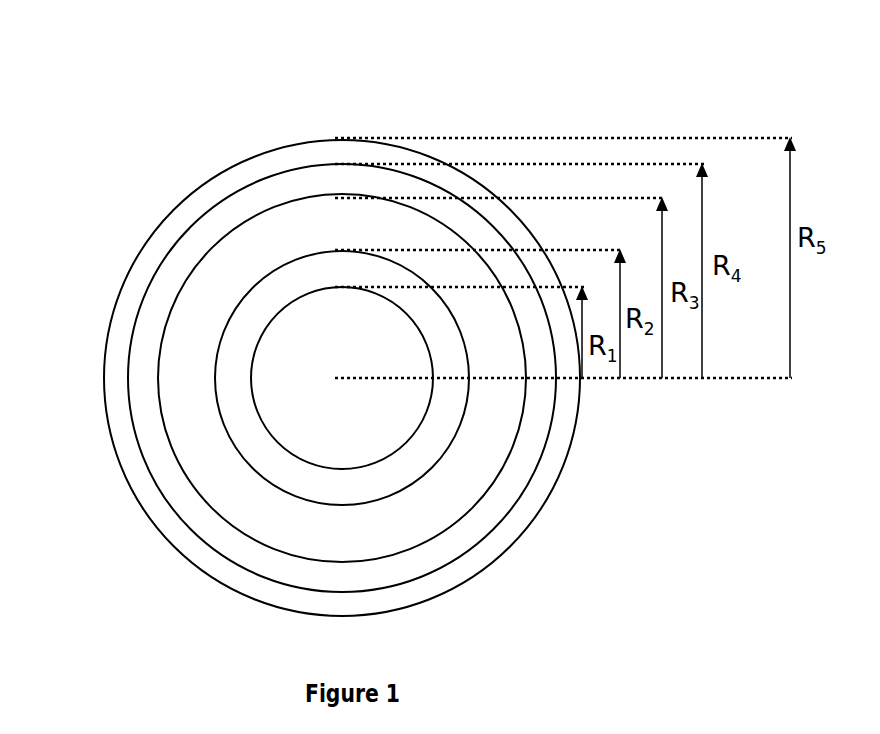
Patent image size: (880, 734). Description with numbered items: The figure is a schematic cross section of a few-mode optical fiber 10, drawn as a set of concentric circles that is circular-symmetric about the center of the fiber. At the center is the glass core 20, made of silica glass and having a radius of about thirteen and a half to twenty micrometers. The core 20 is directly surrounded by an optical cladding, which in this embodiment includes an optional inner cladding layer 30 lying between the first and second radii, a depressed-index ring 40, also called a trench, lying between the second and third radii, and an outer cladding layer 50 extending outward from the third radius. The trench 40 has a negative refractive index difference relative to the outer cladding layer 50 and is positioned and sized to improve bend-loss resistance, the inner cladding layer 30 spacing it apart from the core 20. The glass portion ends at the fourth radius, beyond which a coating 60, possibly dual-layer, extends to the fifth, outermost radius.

The optical fiber 10 is at (303, 321).
The glass core 20 is at (292, 318).
The inner cladding layer 30 is at (232, 340).
The depressed-index ring 40 is at (183, 358).
The outer cladding layer 50 is at (153, 428).
The coating 60 is at (153, 505).